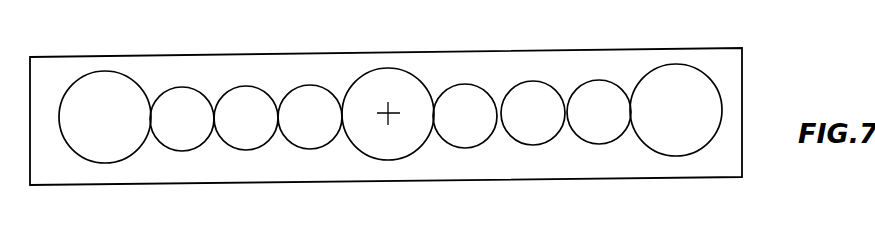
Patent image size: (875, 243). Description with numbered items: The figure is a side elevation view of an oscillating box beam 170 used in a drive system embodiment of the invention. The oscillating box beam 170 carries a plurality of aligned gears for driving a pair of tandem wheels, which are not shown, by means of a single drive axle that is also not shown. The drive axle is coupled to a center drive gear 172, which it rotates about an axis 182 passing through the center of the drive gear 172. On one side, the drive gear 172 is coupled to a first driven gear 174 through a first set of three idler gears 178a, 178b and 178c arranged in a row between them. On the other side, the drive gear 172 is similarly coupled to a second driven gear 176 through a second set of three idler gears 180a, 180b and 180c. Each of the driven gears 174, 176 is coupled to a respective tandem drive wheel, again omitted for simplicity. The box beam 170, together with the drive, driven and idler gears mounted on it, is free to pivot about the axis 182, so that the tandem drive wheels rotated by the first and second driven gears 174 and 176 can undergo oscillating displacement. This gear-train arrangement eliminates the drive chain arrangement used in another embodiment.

The oscillating box beam 170 is at (630, 170).
The center drive gear 172 is at (380, 152).
The first driven gear 174 is at (102, 153).
The second driven gear 176 is at (687, 138).
The idler gear 178a is at (182, 142).
The idler gear 178b is at (243, 135).
The idler gear 178c is at (310, 137).
The idler gear 180a is at (472, 133).
The idler gear 180b is at (533, 138).
The idler gear 180c is at (595, 135).
The axis 182 is at (396, 108).